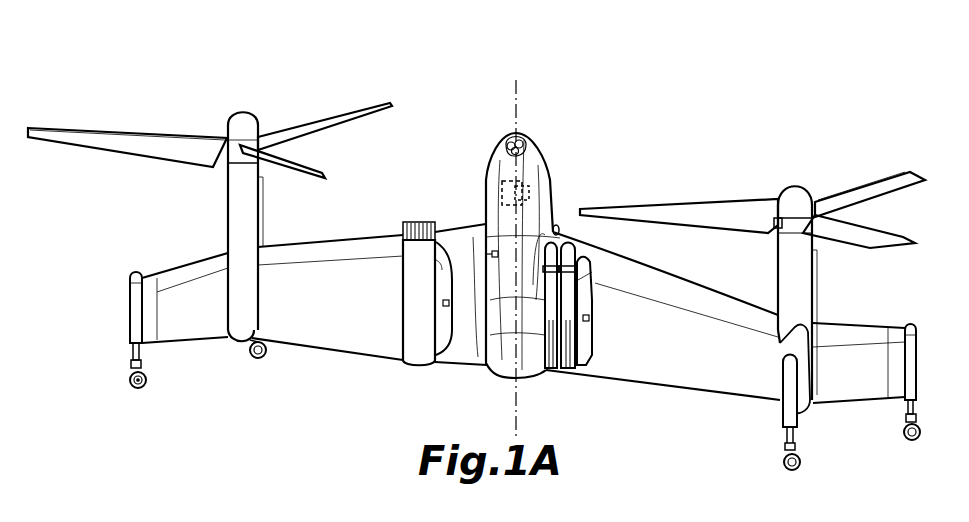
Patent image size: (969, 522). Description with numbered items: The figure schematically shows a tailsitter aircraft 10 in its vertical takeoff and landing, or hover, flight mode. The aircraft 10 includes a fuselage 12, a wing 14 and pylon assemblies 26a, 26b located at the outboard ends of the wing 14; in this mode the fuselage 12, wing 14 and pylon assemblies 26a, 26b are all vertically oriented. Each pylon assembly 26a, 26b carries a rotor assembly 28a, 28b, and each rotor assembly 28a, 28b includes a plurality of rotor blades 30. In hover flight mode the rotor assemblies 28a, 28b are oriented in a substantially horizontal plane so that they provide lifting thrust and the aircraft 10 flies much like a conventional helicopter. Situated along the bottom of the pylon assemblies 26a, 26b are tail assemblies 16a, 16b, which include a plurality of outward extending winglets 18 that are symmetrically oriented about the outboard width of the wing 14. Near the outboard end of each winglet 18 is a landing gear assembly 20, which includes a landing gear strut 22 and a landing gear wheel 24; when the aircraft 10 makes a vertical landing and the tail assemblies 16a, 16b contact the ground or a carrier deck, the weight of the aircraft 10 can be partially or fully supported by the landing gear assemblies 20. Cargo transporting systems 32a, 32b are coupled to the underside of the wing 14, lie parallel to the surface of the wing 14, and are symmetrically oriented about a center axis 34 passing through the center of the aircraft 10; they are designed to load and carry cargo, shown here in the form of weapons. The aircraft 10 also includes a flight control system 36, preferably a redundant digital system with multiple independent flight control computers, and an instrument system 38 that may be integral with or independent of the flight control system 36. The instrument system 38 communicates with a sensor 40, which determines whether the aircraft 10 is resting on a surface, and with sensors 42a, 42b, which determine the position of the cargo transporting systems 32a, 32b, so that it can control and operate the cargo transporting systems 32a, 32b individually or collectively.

The tailsitter aircraft 10 is at (470, 92).
The fuselage 12 is at (541, 163).
The wing 14 is at (694, 336).
The tail assembly 16a is at (238, 318).
The tail assembly 16b is at (808, 383).
The winglet 18 is at (165, 277).
The landing gear assembly 20 is at (131, 309).
The landing gear strut 22 is at (131, 352).
The landing gear wheel 24 is at (134, 390).
The pylon assembly 26a is at (228, 191).
The pylon assembly 26b is at (805, 275).
The rotor assembly 28a is at (186, 136).
The rotor assembly 28b is at (881, 177).
The rotor blade 30 is at (148, 140).
The cargo transporting system 32a is at (445, 240).
The cargo transporting system 32b is at (588, 340).
The center axis 34 is at (517, 98).
The flight control system 36 is at (537, 192).
The instrument system 38 is at (545, 202).
The sensor 40 is at (486, 254).
The sensor 42a is at (451, 306).
The sensor 42b is at (590, 318).